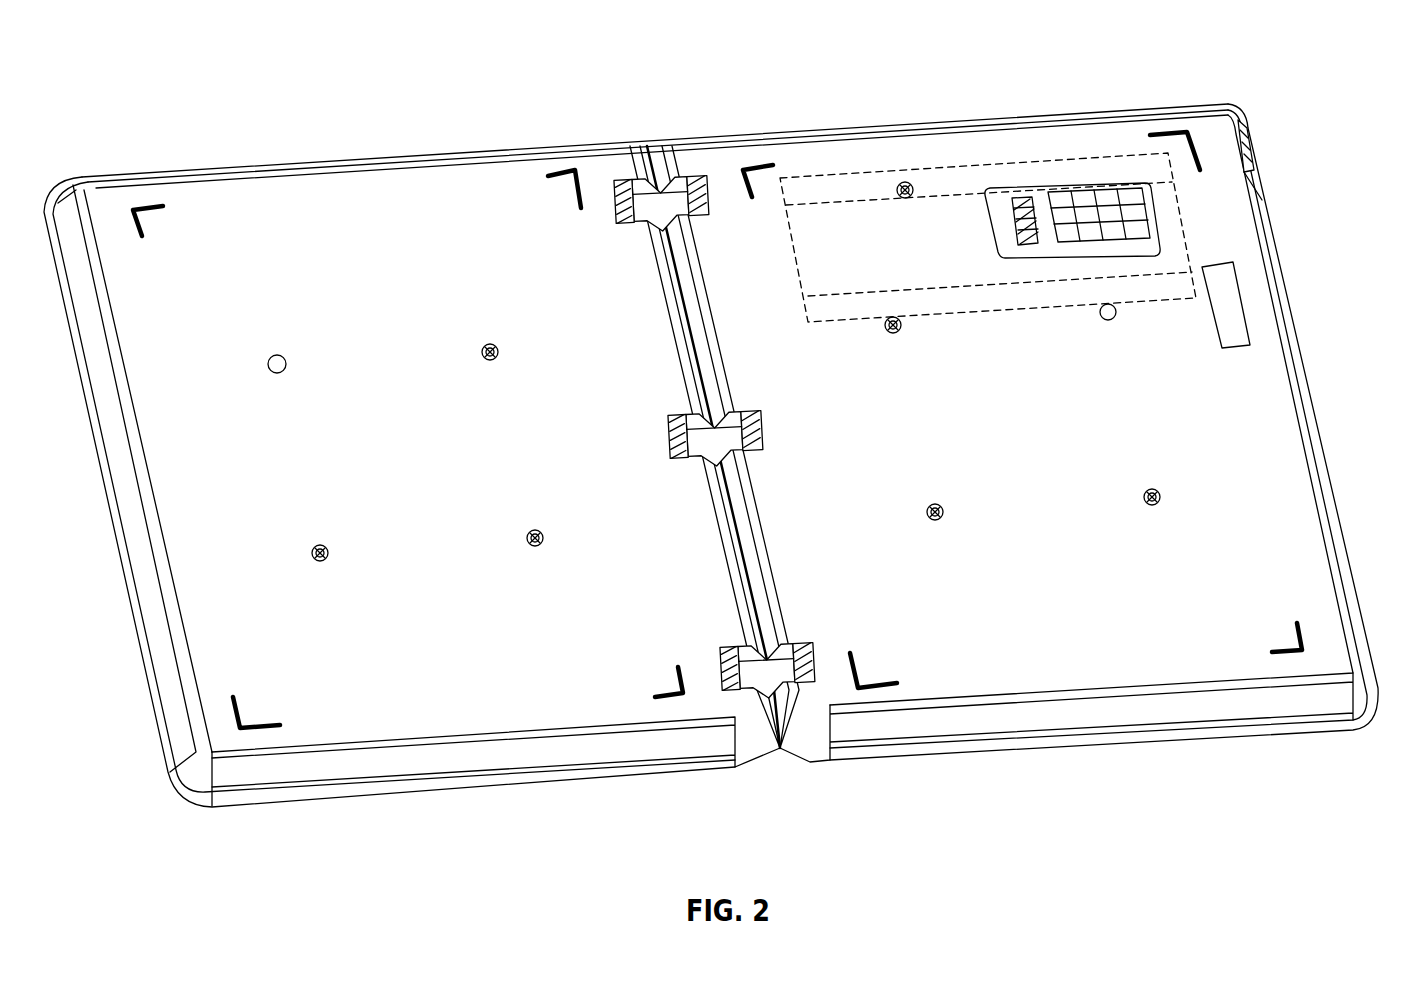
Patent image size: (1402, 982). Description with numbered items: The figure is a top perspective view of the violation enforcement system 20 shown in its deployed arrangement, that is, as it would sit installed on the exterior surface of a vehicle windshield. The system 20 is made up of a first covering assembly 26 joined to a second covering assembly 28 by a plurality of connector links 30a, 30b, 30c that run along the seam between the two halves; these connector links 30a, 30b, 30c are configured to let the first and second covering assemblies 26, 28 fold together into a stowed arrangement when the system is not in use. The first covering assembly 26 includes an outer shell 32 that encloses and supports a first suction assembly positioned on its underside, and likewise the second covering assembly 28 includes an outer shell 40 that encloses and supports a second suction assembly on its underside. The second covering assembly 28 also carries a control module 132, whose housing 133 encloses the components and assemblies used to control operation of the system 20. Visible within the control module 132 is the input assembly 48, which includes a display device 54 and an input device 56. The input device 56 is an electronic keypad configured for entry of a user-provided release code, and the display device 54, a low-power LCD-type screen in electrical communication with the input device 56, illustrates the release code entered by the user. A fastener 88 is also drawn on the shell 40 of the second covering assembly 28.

The system 20 is at (138, 90).
The first covering assembly 26 is at (200, 195).
The second covering assembly 28 is at (800, 165).
The connector link 30a is at (690, 210).
The connector link 30b is at (750, 440).
The connector link 30c is at (795, 652).
The outer shell 32 is at (480, 710).
The outer shell 40 is at (1020, 685).
The input assembly 48 is at (1055, 182).
The display device 54 is at (1018, 192).
The input device 56 is at (1115, 183).
The fastener 88 is at (905, 183).
The control module 132 is at (1135, 170).
The housing 133 is at (948, 165).